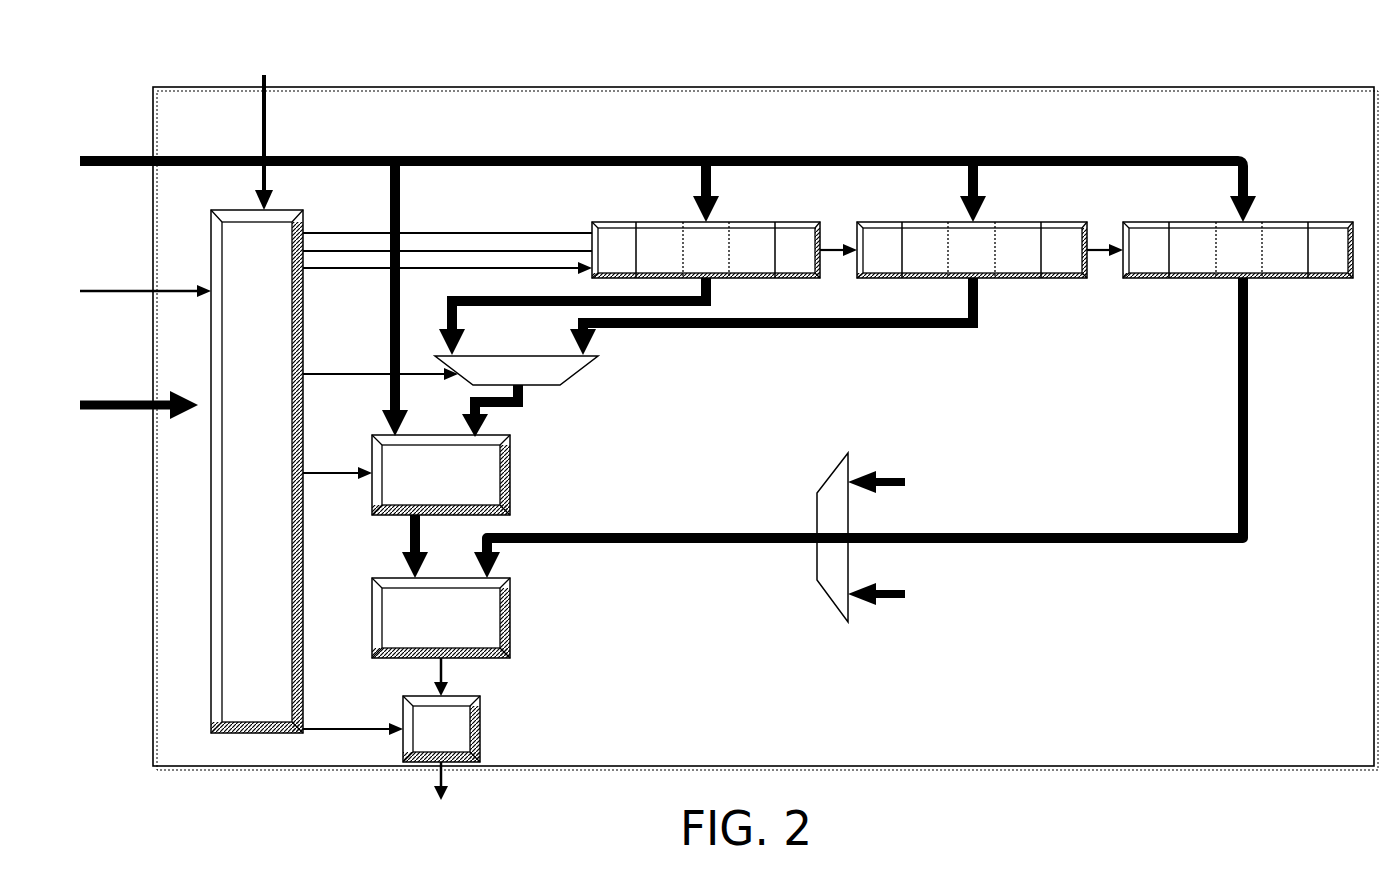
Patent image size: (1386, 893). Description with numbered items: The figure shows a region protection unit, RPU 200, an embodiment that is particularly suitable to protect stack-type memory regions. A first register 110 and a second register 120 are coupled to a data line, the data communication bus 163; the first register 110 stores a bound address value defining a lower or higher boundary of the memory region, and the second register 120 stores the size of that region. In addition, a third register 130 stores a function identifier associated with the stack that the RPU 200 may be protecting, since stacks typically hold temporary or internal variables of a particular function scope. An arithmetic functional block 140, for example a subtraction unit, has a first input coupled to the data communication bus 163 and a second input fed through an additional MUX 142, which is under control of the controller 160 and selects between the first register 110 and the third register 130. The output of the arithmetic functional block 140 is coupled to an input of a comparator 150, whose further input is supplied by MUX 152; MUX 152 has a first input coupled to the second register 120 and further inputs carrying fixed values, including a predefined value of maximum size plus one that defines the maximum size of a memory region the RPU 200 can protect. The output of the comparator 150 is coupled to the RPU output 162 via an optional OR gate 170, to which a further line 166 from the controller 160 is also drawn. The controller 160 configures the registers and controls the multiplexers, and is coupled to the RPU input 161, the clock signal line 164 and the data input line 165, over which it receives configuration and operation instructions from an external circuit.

The RPU 200 is at (865, 767).
The first register 110 is at (808, 278).
The second register 120 is at (1338, 278).
The third register 130 is at (1062, 278).
The arithmetic functional block 140 is at (511, 463).
The MUX 142 is at (568, 381).
The comparator 150 is at (511, 626).
The MUX 152 is at (833, 590).
The controller 160 is at (231, 697).
The RPU input 161 is at (264, 84).
The RPU output 162 is at (443, 803).
The data communication bus 163 is at (112, 155).
The clock signal line 164 is at (118, 290).
The data input line 165 is at (122, 400).
The enable signal line 166 is at (339, 729).
The OR gate 170 is at (481, 733).